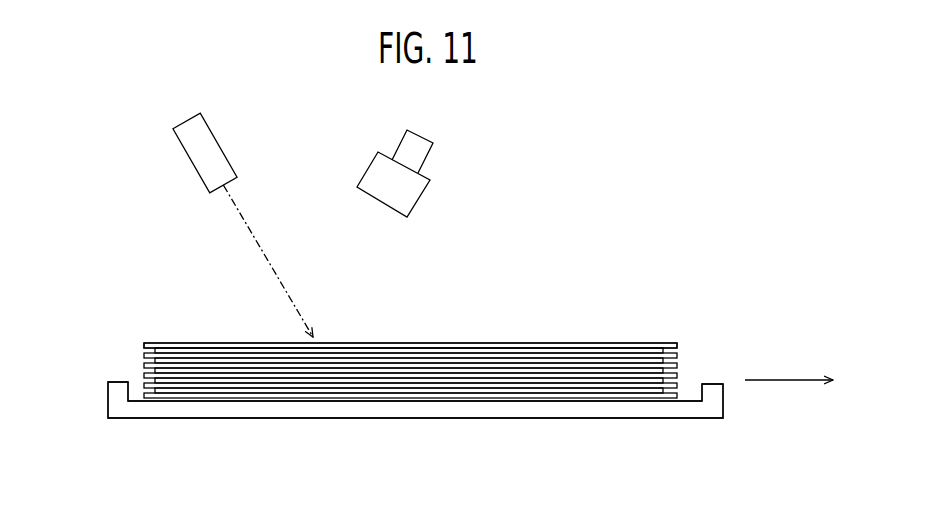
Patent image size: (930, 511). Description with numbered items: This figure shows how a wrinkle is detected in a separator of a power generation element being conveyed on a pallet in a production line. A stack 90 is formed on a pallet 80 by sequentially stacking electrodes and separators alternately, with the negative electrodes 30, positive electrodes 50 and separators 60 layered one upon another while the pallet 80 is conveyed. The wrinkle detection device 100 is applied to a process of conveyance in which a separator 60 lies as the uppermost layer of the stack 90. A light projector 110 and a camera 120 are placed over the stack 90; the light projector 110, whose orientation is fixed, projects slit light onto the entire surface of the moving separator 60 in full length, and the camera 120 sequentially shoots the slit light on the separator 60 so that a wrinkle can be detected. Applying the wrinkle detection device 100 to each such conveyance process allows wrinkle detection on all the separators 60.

The wrinkle detection device 100 is at (70, 149).
The light projector 110 is at (186, 122).
The camera 120 is at (427, 182).
The negative electrode 30 is at (553, 360).
The separator 60 is at (602, 343).
The positive electrode 50 is at (643, 352).
The stack 90 is at (686, 356).
The pallet 80 is at (652, 410).